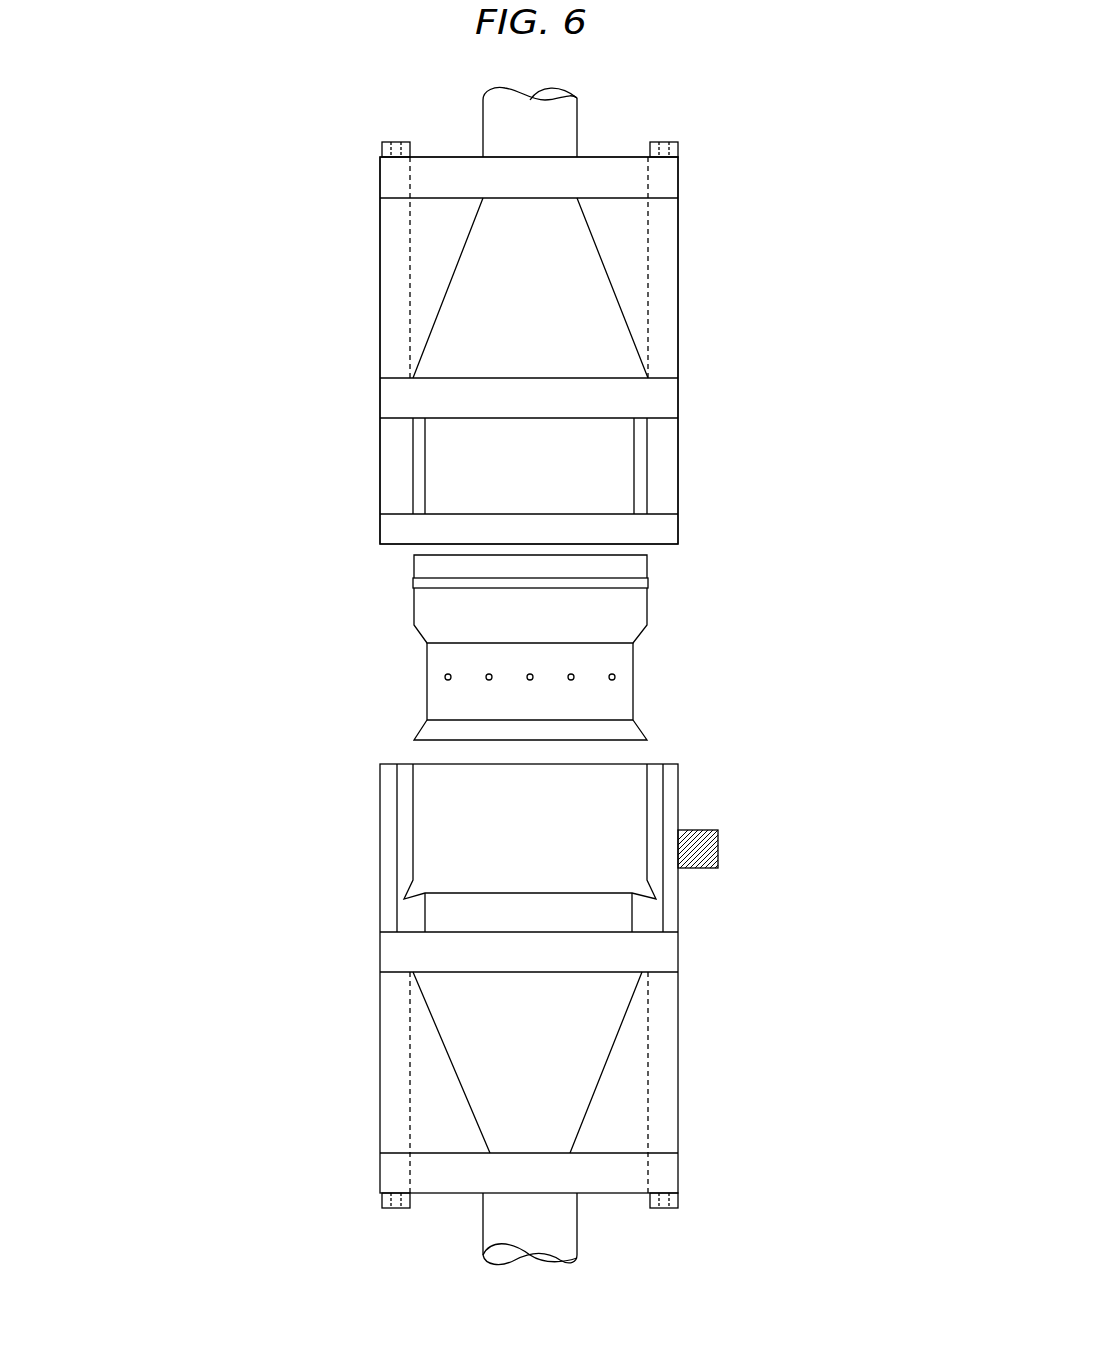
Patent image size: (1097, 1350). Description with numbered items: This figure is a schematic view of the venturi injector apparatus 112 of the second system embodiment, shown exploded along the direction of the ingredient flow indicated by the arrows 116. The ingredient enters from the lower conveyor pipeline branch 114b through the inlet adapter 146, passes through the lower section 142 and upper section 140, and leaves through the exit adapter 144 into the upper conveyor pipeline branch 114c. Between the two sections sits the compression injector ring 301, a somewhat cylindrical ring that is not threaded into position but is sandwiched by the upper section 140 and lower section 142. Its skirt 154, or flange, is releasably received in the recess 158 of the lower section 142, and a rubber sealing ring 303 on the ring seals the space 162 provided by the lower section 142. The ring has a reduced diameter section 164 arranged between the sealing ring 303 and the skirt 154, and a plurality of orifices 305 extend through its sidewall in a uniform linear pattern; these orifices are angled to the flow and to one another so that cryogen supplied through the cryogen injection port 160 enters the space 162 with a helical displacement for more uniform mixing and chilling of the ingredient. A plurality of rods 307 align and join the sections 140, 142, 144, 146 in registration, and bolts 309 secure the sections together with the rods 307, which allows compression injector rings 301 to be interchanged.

The injector apparatus 112 is at (735, 300).
The conveyor pipeline branch 114b is at (577, 1215).
The conveyor pipeline branch 114c is at (577, 130).
The ingredient flow arrows 116 is at (530, 290).
The upper section 140 is at (380, 440).
The lower section 142 is at (343, 822).
The exit adapter 144 is at (336, 284).
The inlet adapter 146 is at (380, 1058).
The skirt 154 is at (645, 730).
The recess 158 is at (405, 890).
The cryogen injection port 160 is at (744, 846).
The space 162 is at (545, 863).
The reduced diameter section 164 is at (427, 662).
The compression injector ring 301 is at (650, 603).
The rubber sealing ring 303 is at (413, 584).
The orifices 305 is at (445, 677).
The rods 307 is at (380, 242).
The bolts 309 is at (678, 152).